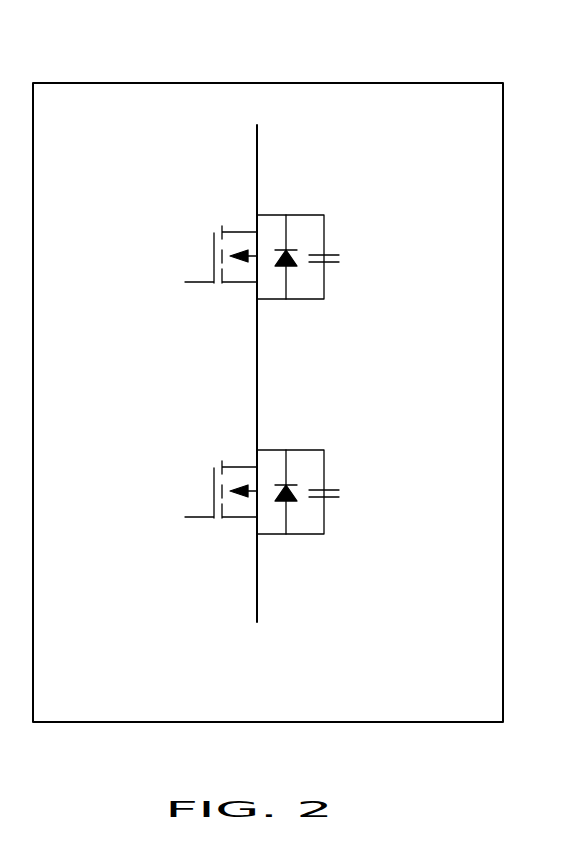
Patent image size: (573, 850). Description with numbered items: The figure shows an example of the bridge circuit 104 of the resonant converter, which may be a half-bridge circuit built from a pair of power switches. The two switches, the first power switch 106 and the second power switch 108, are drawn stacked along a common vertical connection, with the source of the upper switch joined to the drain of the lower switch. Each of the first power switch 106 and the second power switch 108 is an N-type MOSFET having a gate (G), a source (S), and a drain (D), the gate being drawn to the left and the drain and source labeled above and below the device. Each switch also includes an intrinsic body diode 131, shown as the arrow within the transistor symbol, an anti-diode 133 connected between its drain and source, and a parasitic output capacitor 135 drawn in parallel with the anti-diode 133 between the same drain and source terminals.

The bridge circuit 104 is at (469, 83).
The first power switch 106 is at (213, 245).
The second power switch 108 is at (213, 480).
The intrinsic body diode 131 is at (240, 253).
The anti-diode 133 is at (289, 251).
The parasitic output capacitor 135 is at (322, 255).